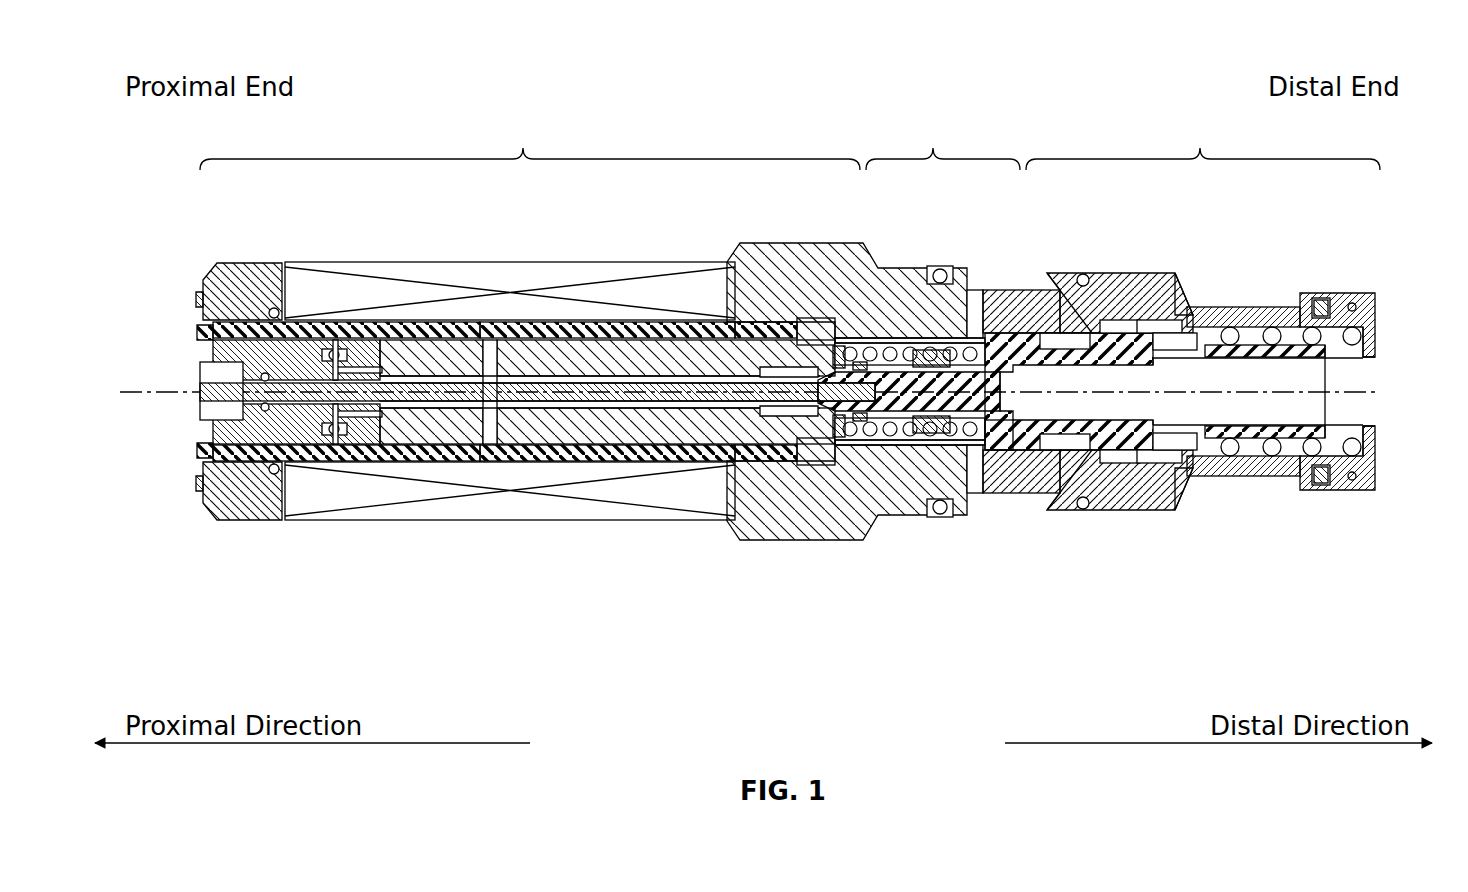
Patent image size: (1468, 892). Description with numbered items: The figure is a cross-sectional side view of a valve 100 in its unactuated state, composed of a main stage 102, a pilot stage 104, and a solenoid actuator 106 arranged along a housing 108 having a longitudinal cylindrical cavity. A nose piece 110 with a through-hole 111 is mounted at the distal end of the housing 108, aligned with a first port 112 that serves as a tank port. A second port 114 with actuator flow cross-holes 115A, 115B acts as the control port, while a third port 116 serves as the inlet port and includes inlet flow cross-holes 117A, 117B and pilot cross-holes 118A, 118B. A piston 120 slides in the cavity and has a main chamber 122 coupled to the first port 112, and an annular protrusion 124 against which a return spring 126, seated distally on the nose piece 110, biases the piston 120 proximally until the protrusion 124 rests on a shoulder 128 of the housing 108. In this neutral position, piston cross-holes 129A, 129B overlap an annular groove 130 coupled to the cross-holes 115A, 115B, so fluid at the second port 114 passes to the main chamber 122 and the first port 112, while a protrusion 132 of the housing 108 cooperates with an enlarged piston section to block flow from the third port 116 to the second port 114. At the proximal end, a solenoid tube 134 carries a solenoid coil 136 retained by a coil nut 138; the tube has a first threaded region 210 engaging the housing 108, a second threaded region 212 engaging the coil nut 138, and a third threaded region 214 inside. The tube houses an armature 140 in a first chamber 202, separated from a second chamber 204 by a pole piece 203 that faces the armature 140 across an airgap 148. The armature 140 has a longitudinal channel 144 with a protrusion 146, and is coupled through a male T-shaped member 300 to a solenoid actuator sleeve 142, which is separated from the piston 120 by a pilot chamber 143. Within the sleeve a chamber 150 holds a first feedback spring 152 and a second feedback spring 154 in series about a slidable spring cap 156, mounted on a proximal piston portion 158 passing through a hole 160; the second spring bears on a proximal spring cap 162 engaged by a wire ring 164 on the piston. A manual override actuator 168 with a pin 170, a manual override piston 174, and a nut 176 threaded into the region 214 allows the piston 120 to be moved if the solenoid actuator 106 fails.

The valve 100 is at (182, 186).
The main stage 102 is at (1206, 145).
The pilot stage 104 is at (940, 145).
The solenoid actuator 106 is at (530, 145).
The housing 108 is at (800, 259).
The nose piece 110 is at (1375, 308).
The through-hole 111 is at (1380, 330).
The first port 112 is at (1376, 392).
The second port 114 is at (1278, 262).
The actuator flow cross-hole 115A is at (1178, 290).
The actuator flow cross-hole 115B is at (1183, 511).
The third port 116 is at (995, 283).
The inlet flow cross-hole 117A is at (1050, 300).
The inlet flow cross-hole 117B is at (1053, 502).
The pilot cross-hole 118A is at (993, 282).
The pilot cross-hole 118B is at (980, 504).
The piston 120 is at (1100, 509).
The main chamber 122 is at (1303, 432).
The protrusion 124 is at (1212, 449).
The return spring 126 is at (1370, 494).
The shoulder 128 is at (1205, 327).
The piston cross-hole 129A is at (1112, 318).
The piston cross-hole 129B is at (1176, 479).
The annular groove 130 is at (1152, 459).
The protrusion 132 is at (1113, 294).
The solenoid tube 134 is at (538, 328).
The solenoid coil 136 is at (484, 258).
The coil nut 138 is at (240, 308).
The armature 140 is at (668, 348).
The solenoid actuator sleeve 142 is at (853, 424).
The pilot chamber 143 is at (997, 459).
The longitudinal channel 144 is at (712, 406).
The protrusion 146 is at (630, 378).
The airgap 148 is at (470, 439).
The chamber 150 is at (818, 424).
The first feedback spring 152 is at (940, 429).
The second feedback spring 154 is at (903, 347).
The slidable spring cap 156 is at (910, 368).
The proximal piston portion 158 is at (908, 441).
The hole 160 is at (990, 429).
The proximal spring cap 162 is at (885, 322).
The wire ring 164 is at (822, 432).
The manual override actuator 168 is at (198, 332).
The pin 170 is at (577, 406).
The manual override piston 174 is at (324, 346).
The nut 176 is at (360, 362).
The first chamber 202 is at (487, 368).
The pole piece 203 is at (425, 424).
The second chamber 204 is at (345, 446).
The first threaded region 210 is at (745, 319).
The second threaded region 212 is at (256, 326).
The third threaded region 214 is at (262, 441).
The male T-shaped member 300 is at (760, 434).